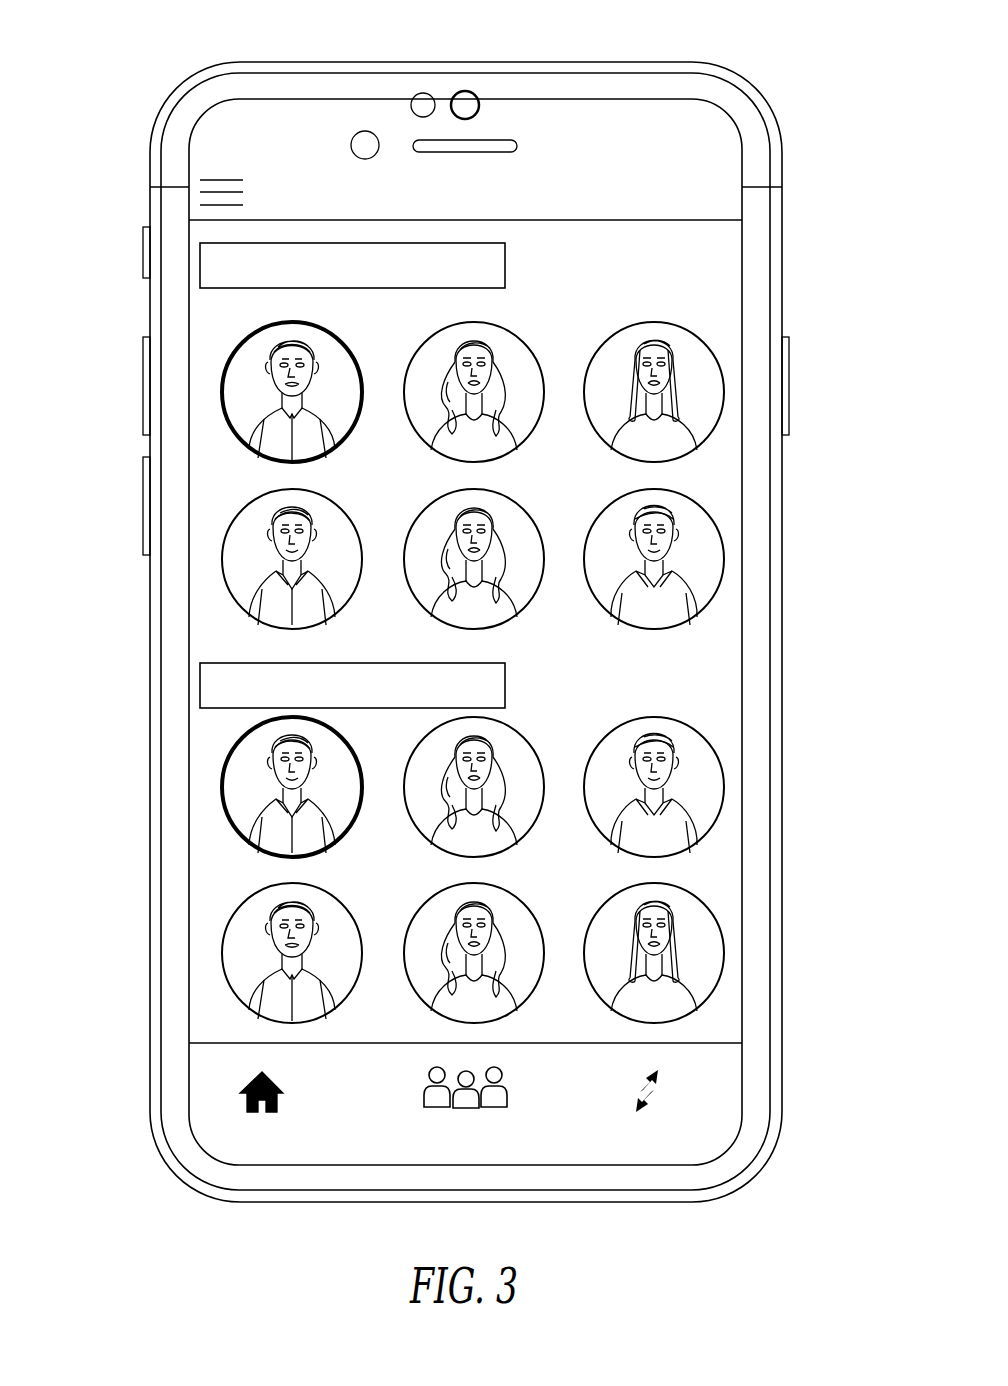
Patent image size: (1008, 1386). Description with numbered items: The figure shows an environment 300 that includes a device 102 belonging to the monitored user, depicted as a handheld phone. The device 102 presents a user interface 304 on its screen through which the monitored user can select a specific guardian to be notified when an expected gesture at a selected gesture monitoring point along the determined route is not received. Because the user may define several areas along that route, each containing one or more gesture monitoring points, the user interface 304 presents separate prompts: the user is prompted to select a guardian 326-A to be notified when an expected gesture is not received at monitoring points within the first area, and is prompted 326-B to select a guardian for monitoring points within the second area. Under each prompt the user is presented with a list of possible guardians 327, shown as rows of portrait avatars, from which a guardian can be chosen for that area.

The environment 300 is at (68, 39).
The device 102 is at (463, 62).
The user interface 304 is at (617, 220).
The guardian selection prompt for area A 326-A is at (200, 263).
The guardian selection prompt for area B 326-B is at (200, 683).
The list of possible guardians 327 is at (800, 290).